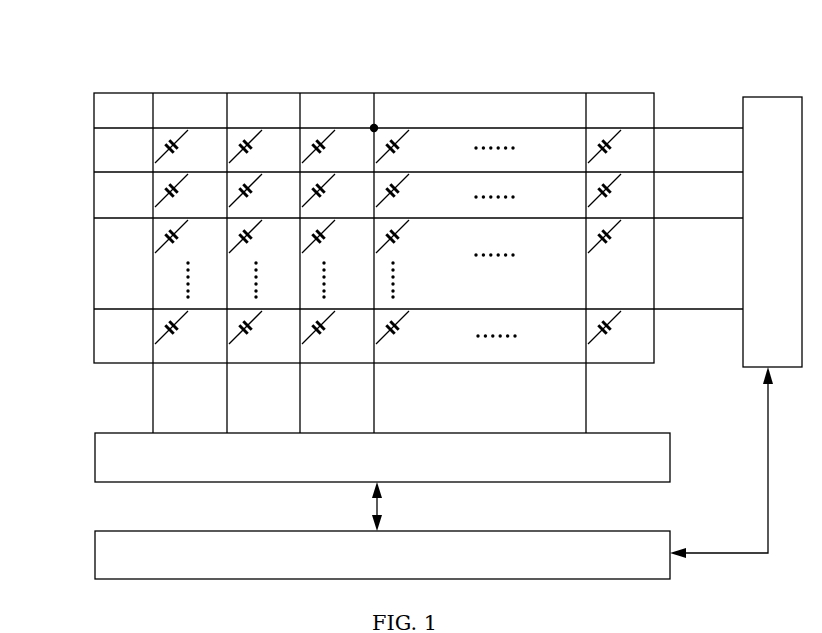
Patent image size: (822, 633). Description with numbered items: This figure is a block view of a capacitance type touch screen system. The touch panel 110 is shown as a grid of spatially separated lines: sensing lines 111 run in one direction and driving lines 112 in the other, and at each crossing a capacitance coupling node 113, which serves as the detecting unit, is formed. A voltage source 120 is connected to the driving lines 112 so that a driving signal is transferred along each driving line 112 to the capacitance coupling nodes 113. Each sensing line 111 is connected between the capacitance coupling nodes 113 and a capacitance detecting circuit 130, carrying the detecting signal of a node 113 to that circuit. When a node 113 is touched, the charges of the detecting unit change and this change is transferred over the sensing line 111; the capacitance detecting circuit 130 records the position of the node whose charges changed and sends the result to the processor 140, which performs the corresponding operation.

The touch panel 110 is at (122, 93).
The sensing line 111 is at (376, 123).
The driving line 112 is at (350, 127).
The capacitance coupling node 113 is at (380, 123).
The voltage source 120 is at (770, 97).
The capacitance detecting circuit 130 is at (95, 457).
The processor 140 is at (95, 565).